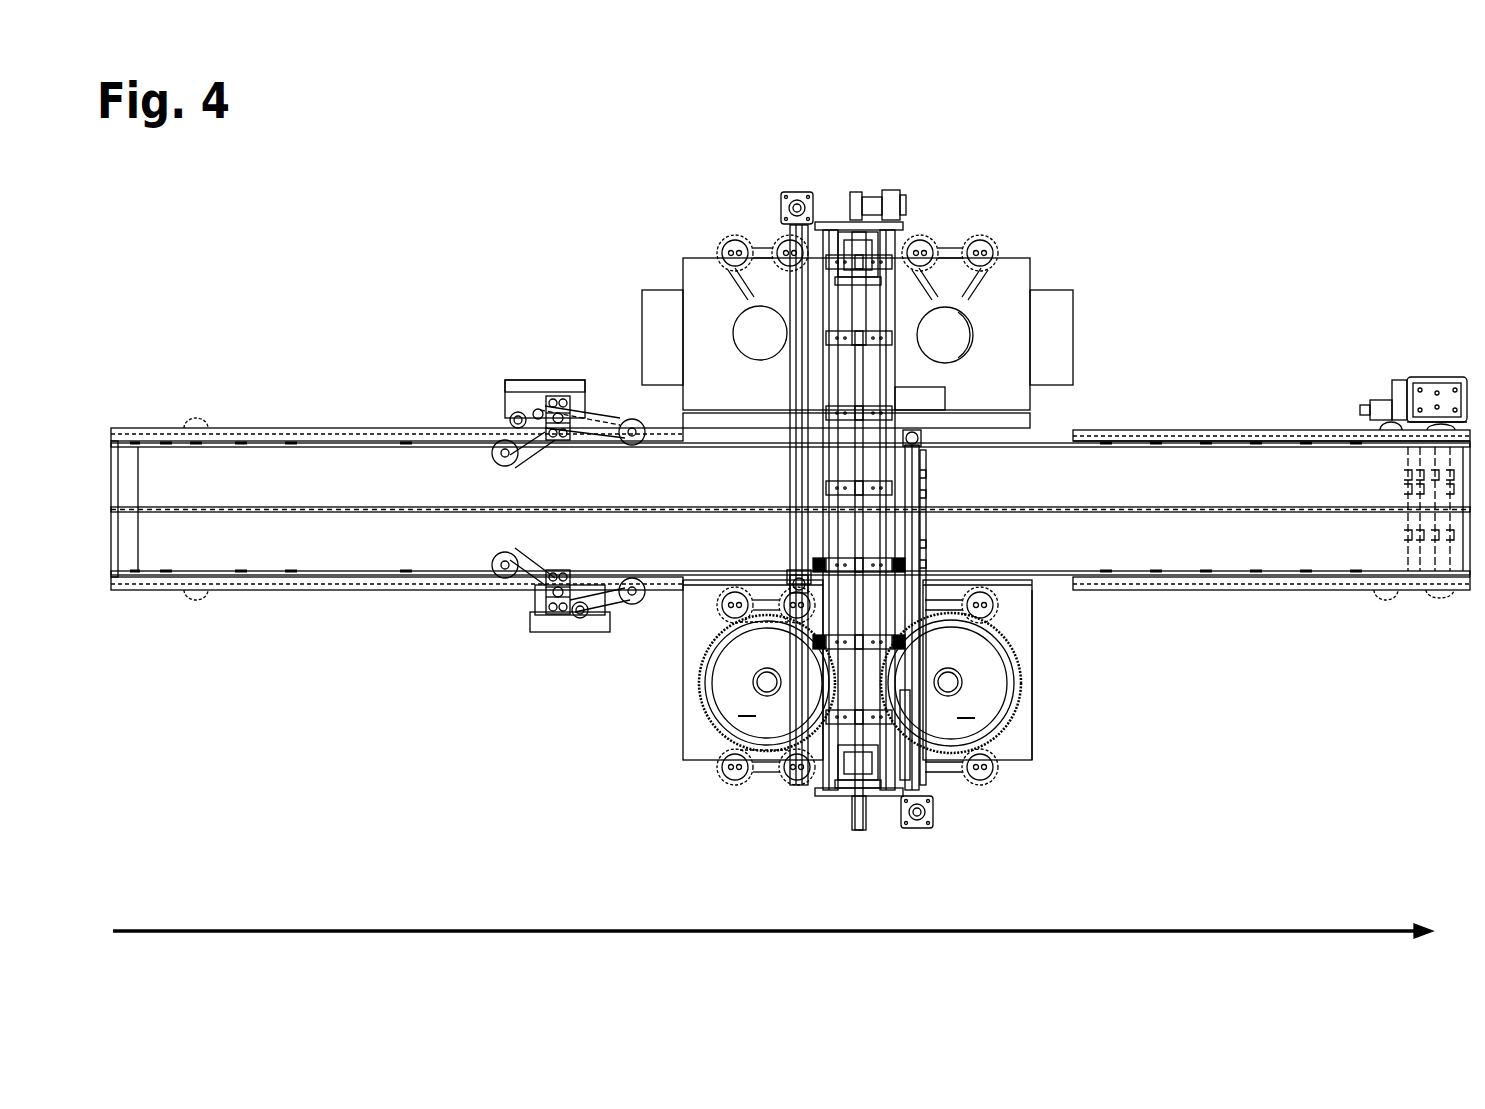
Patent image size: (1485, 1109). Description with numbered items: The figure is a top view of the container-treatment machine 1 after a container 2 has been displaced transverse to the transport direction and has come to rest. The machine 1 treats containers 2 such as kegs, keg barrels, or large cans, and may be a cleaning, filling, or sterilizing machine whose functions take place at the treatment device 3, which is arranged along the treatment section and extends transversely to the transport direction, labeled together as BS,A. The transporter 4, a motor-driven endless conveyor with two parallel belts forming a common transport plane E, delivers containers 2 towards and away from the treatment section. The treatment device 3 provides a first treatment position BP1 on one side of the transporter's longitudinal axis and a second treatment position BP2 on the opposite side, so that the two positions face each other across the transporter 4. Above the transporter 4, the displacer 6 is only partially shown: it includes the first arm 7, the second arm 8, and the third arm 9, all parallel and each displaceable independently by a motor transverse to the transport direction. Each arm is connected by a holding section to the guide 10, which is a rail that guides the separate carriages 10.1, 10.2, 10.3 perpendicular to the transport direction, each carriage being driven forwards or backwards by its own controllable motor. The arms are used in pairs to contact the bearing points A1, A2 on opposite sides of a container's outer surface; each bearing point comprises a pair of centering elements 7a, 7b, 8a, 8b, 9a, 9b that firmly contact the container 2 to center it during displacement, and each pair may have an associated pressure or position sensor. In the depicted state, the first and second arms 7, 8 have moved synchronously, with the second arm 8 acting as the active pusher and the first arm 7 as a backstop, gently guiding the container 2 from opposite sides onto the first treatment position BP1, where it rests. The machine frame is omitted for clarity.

The container-treatment machine 1 is at (300, 215).
The container 2 is at (857, 670).
The treatment device 3 is at (1100, 302).
The transporter 4 is at (267, 408).
The displacer 6 is at (656, 265).
The first arm 7 is at (985, 775).
The centering element 7a is at (730, 775).
The centering element 7b is at (790, 778).
The second arm 8 is at (1003, 617).
The centering element 8a is at (725, 617).
The centering element 8b is at (781, 615).
The third arm 9 is at (722, 236).
The centering element 9a is at (920, 234).
The centering element 9b is at (987, 233).
The guide 10 is at (790, 378).
The carriage 10.1 is at (840, 785).
The carriage 10.2 is at (870, 607).
The carriage 10.3 is at (843, 235).
The bearing point A1 is at (770, 762).
The bearing point A2 is at (765, 617).
The first treatment position BP1 is at (1035, 667).
The second treatment position BP2 is at (984, 350).
The transport plane E is at (1210, 528).
The treatment section and transport direction BS,A is at (773, 951).